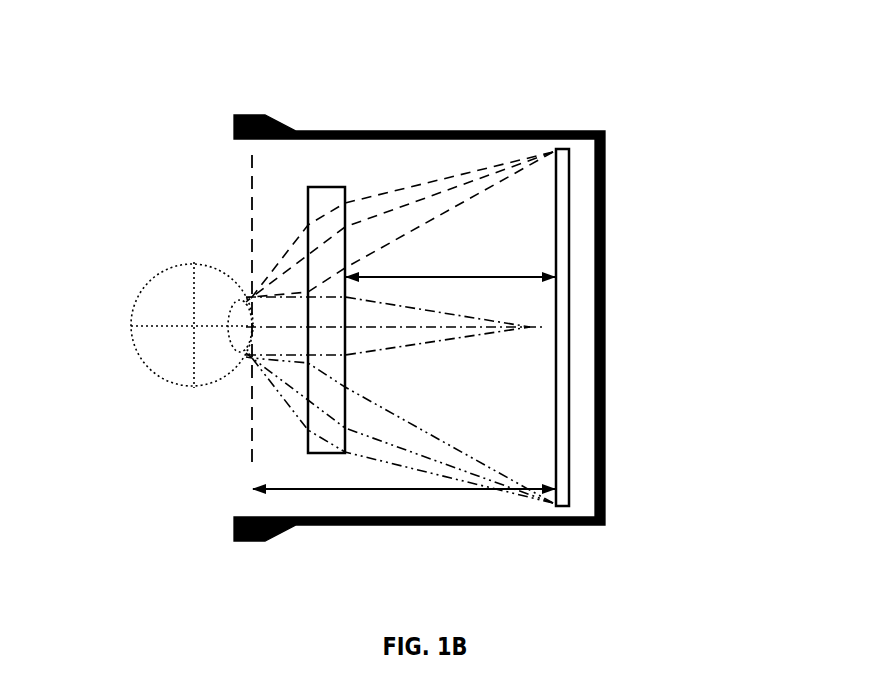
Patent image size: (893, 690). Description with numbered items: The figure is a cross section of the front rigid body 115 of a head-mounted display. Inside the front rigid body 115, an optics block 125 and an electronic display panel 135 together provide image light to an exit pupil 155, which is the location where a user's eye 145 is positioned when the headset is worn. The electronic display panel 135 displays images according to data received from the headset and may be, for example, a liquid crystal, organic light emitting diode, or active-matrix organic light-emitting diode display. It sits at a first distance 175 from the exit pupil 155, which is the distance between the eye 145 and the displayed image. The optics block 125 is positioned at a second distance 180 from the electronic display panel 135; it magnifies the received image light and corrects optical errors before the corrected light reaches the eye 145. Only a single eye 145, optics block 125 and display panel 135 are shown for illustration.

The front rigid body 115 is at (25, 46).
The optics block 125 is at (307, 200).
The electronic display panel 135 is at (569, 250).
The eye 145 is at (165, 272).
The exit pupil 155 is at (243, 452).
The first distance 175 is at (377, 497).
The second distance 180 is at (513, 290).